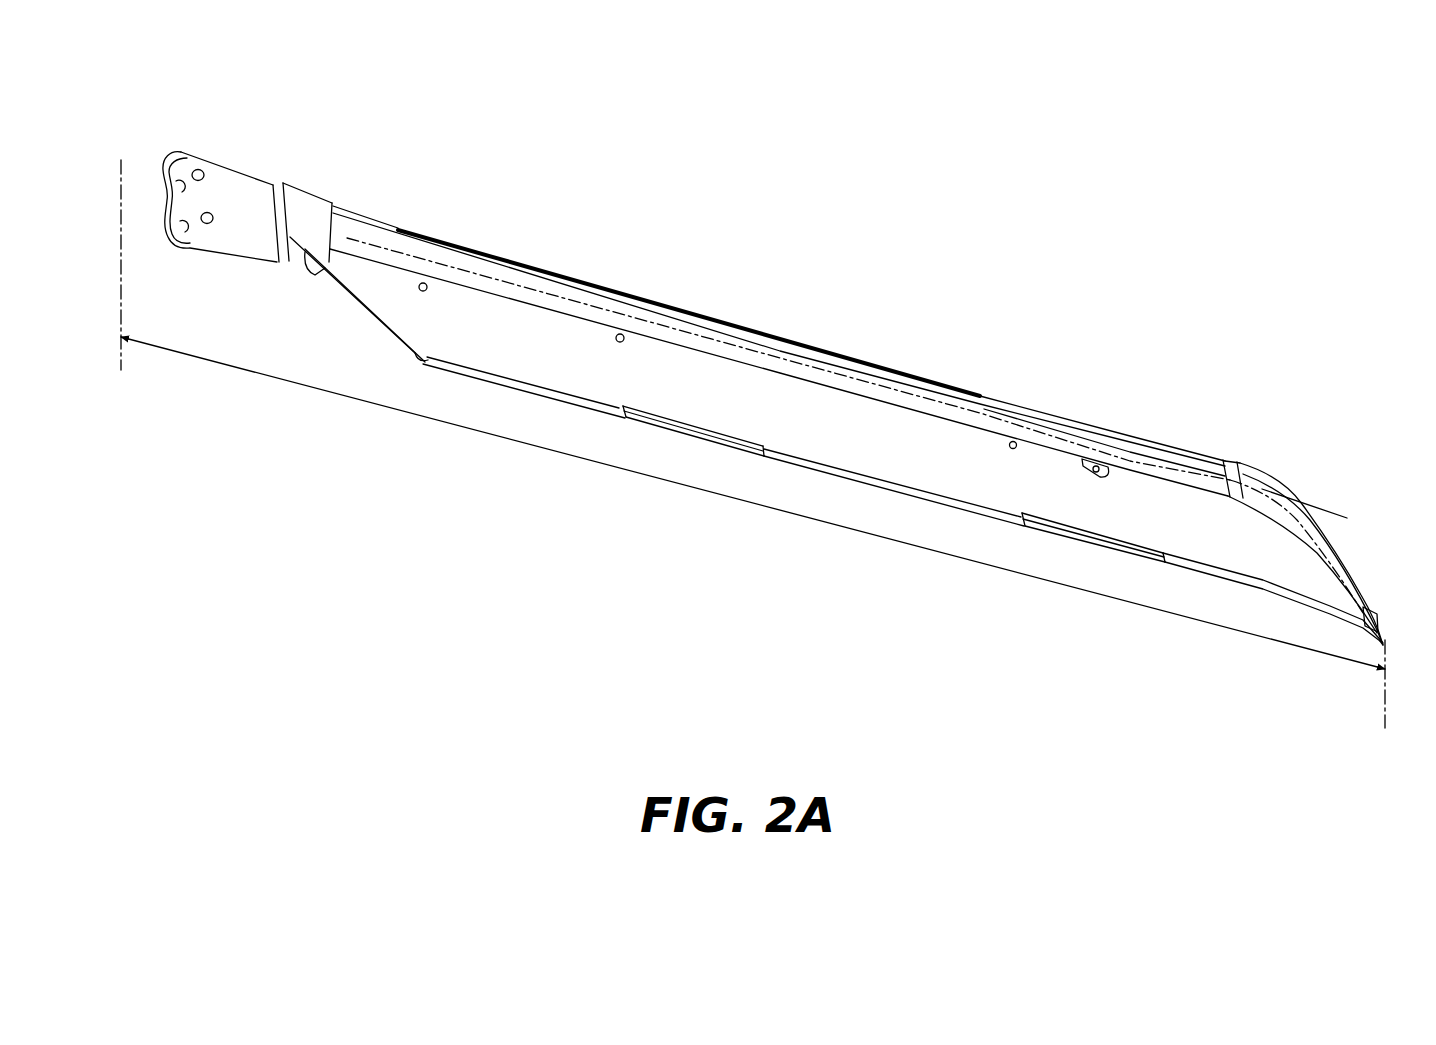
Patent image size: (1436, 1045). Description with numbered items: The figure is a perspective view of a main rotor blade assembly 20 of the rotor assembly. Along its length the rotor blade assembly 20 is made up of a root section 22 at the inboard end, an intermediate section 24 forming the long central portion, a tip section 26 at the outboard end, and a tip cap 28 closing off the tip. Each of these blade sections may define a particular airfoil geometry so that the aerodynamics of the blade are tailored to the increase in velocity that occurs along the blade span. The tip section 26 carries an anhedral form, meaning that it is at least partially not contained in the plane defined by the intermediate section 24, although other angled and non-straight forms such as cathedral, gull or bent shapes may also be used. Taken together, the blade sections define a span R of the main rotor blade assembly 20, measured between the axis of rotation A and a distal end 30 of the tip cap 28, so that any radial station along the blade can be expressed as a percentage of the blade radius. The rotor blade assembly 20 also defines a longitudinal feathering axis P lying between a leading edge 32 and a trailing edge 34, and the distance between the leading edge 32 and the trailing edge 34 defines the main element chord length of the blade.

The rotor blade assembly 20 is at (888, 199).
The root section 22 is at (321, 163).
The intermediate section 24 is at (780, 350).
The tip section 26 is at (1279, 477).
The tip cap 28 is at (1358, 555).
The distal end 30 is at (1374, 618).
The leading edge 32 is at (909, 372).
The trailing edge 34 is at (880, 478).
The axis of rotation A is at (121, 168).
The longitudinal feathering axis P is at (1327, 510).
The span R is at (787, 516).